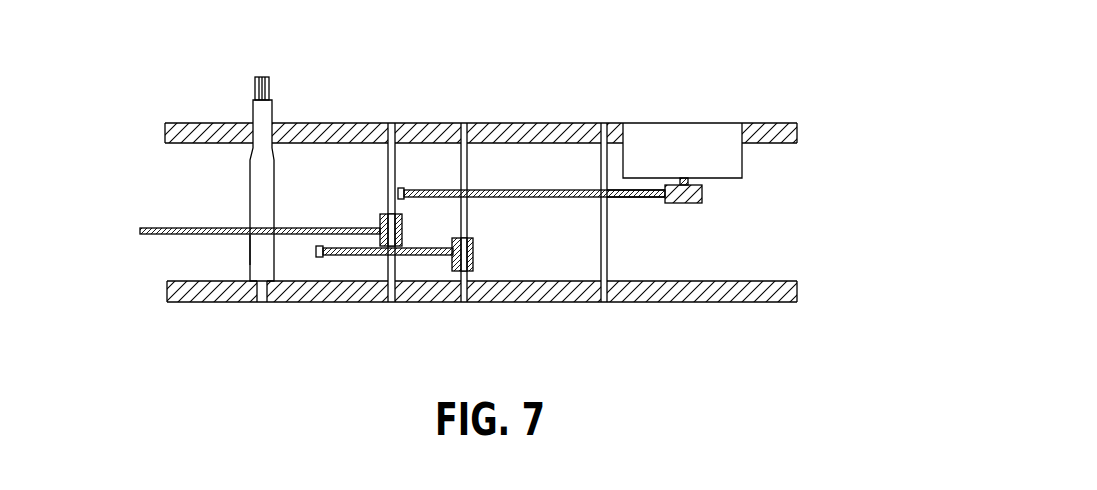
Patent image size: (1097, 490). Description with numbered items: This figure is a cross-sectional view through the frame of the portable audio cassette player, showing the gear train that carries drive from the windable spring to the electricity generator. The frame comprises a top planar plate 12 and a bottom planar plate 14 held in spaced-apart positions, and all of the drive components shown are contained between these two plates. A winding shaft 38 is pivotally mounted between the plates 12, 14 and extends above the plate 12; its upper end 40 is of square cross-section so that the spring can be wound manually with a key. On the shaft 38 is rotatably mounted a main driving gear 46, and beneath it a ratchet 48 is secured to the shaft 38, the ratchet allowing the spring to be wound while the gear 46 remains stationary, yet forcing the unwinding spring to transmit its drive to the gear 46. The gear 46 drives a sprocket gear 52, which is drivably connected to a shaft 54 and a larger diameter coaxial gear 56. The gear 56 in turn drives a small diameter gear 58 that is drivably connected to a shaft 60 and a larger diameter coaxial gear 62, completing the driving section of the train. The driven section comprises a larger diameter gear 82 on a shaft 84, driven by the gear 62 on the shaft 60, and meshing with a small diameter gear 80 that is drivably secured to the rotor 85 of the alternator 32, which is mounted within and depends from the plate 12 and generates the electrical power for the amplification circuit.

The top planar plate 12 is at (770, 128).
The bottom planar plate 14 is at (780, 302).
The alternator 32 is at (692, 143).
The winding shaft 38 is at (260, 110).
The upper end of the shaft 40 is at (254, 90).
The main driving gear 46 is at (180, 228).
The ratchet 48 is at (250, 249).
The sprocket gear 52 is at (380, 222).
The shaft 54 is at (388, 155).
The larger diameter coaxial gear 56 is at (340, 256).
The small diameter gear 58 is at (475, 257).
The shaft 60 is at (467, 205).
The larger diameter coaxial gear 62 is at (423, 188).
The small diameter gear 80 is at (702, 192).
The larger diameter gear 82 is at (632, 200).
The shaft 84 is at (607, 245).
The rotor 85 is at (688, 178).